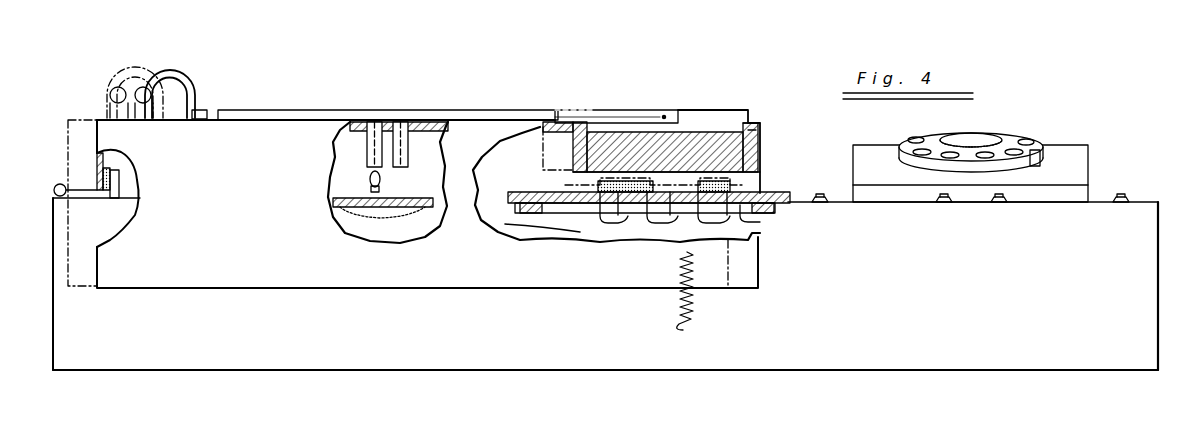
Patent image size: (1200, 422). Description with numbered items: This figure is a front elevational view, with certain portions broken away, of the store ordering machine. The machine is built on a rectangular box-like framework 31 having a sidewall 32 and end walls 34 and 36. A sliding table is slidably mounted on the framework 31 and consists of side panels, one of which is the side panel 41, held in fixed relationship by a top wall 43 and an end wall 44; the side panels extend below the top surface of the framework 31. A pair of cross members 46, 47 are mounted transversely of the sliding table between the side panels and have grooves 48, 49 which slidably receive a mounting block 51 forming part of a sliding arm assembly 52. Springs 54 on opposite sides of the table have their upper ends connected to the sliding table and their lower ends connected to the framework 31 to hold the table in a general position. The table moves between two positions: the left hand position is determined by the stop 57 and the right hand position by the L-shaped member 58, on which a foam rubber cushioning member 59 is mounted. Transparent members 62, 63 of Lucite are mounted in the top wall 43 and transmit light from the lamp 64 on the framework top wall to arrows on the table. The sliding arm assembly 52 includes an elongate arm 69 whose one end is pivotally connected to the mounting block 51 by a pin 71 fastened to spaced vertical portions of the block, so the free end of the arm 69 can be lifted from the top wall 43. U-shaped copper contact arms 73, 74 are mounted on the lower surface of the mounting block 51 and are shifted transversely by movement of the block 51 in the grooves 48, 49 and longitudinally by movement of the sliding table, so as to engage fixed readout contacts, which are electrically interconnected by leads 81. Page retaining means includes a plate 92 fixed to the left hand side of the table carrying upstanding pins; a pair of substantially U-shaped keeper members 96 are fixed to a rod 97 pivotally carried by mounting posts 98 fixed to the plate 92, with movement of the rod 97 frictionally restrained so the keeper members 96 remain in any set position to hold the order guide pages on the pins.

The rectangular box-like framework 31 is at (1145, 201).
The sidewall 32 is at (935, 350).
The end wall 34 is at (1160, 332).
The end wall 36 is at (53, 345).
The side panel 41 is at (453, 276).
The top wall 43 is at (420, 122).
The end wall 44 is at (100, 170).
The cross member 46 is at (573, 163).
The cross member 47 is at (762, 136).
The groove 48 is at (574, 151).
The groove 49 is at (757, 128).
The mounting block 51 is at (695, 134).
The sliding arm assembly 52 is at (597, 108).
The spring 54 is at (690, 300).
The stop 57 is at (54, 190).
The L-shaped member 58 is at (113, 183).
The foam rubber cushioning member 59 is at (112, 160).
The transparent member 62 is at (372, 150).
The transparent member 63 is at (402, 148).
The lamp 64 is at (383, 182).
The elongate member or arm 69 is at (278, 110).
The pin 71 is at (664, 115).
The contact arm 73 is at (600, 206).
The contact arm 74 is at (732, 188).
The leads 81 is at (622, 210).
The plate 92 is at (206, 112).
The keeper member 96 is at (177, 68).
The rod 97 is at (140, 88).
The mounting post 98 is at (143, 110).